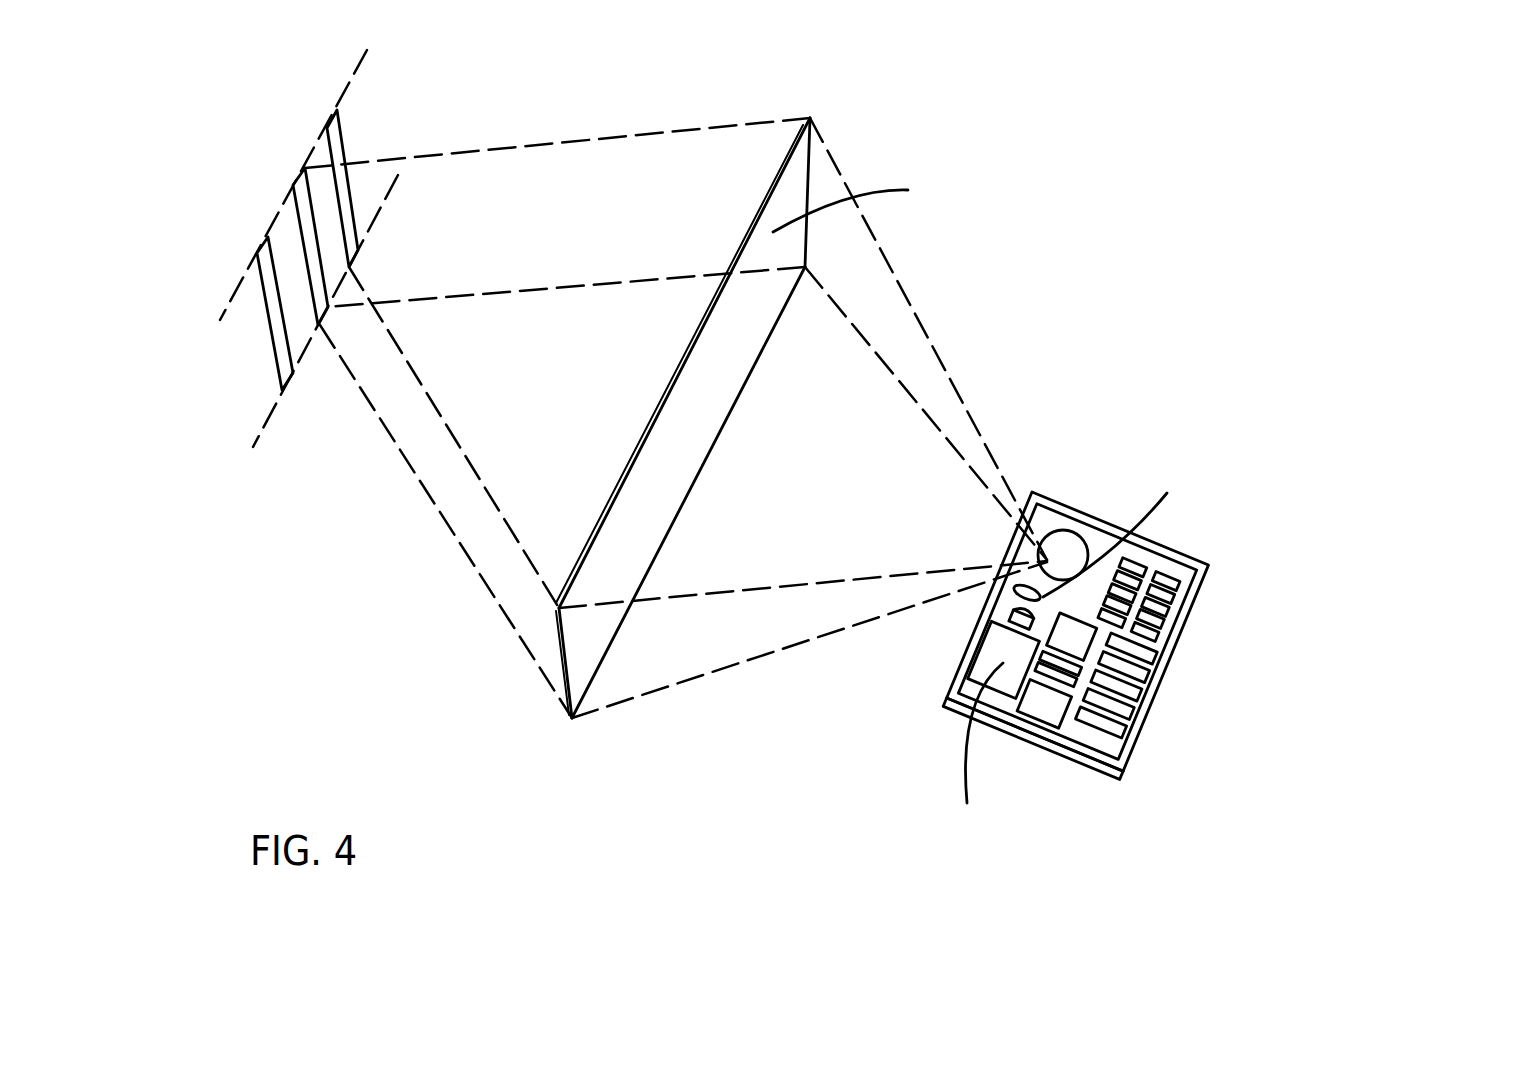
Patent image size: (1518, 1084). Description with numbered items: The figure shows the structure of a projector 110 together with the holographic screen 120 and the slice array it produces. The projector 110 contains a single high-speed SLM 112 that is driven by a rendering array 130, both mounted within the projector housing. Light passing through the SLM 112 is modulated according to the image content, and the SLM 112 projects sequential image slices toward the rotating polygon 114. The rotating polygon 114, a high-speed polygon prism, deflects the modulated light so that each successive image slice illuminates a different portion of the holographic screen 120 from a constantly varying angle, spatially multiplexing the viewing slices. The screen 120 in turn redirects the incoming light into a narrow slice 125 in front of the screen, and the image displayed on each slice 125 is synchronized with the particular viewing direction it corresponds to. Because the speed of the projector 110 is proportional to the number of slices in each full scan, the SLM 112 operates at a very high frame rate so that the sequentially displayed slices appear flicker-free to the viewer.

The projector 110 is at (1123, 782).
The SLM 112 is at (1020, 615).
The rotating polygon 114 is at (1057, 552).
The holographic screen 120 is at (810, 118).
The slice 125 is at (305, 171).
The rendering array 130 is at (1128, 742).